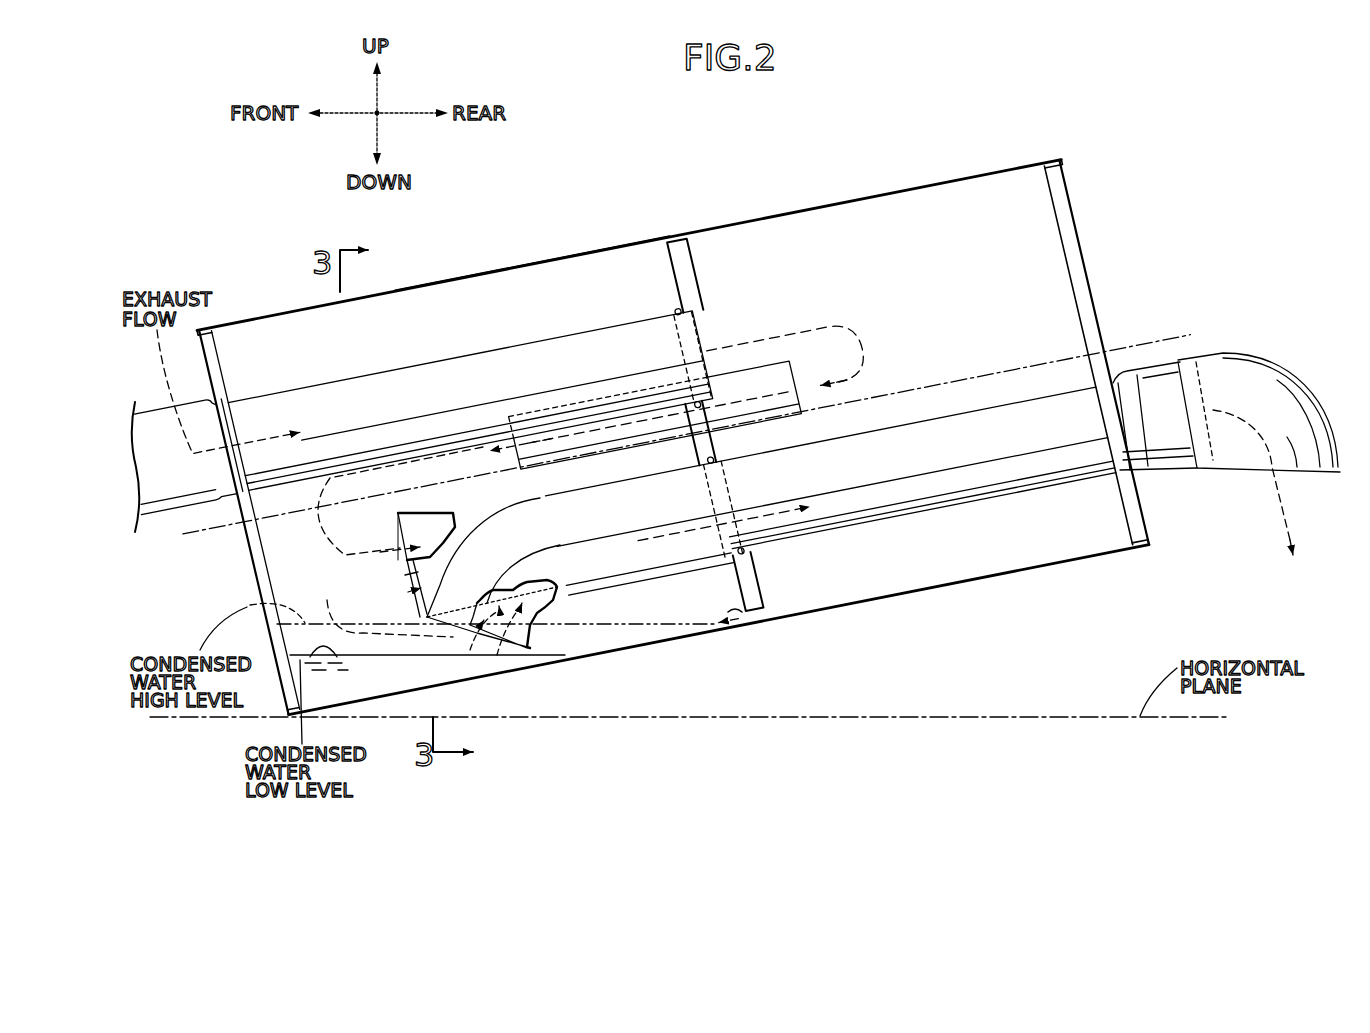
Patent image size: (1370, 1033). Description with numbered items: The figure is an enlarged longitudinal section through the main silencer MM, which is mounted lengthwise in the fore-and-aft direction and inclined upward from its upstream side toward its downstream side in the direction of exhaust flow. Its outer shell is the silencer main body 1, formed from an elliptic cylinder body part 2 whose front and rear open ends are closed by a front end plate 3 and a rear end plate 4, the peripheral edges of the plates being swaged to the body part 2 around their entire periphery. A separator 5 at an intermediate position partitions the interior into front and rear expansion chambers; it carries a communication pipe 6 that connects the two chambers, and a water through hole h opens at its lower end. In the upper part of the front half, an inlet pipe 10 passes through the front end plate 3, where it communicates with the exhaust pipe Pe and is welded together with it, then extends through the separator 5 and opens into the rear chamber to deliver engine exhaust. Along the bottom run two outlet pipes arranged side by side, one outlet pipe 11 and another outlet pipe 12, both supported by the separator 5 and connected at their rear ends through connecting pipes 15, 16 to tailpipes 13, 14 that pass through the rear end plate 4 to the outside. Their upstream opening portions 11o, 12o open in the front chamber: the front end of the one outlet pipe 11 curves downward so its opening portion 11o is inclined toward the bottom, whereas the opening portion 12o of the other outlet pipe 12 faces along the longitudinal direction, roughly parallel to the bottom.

The silencer main body 1 is at (786, 213).
The elliptic cylinder body part 2 is at (466, 280).
The front end plate 3 is at (227, 367).
The rear end plate 4 is at (1066, 197).
The separator 5 is at (658, 282).
The communication pipe 6 is at (767, 370).
The inlet pipe 10 is at (496, 365).
The one outlet pipe 11 is at (640, 556).
The opening portion 11o is at (517, 650).
The other outlet pipe 12 is at (468, 512).
The opening portion 12o is at (397, 530).
The tailpipe 13 is at (1253, 367).
The tailpipe 14 is at (1259, 378).
The connecting pipe 15 is at (1151, 380).
The connecting pipe 16 is at (1165, 374).
The water through hole h is at (757, 618).
The exhaust pipe Pe is at (160, 505).
The main silencer MM is at (851, 180).